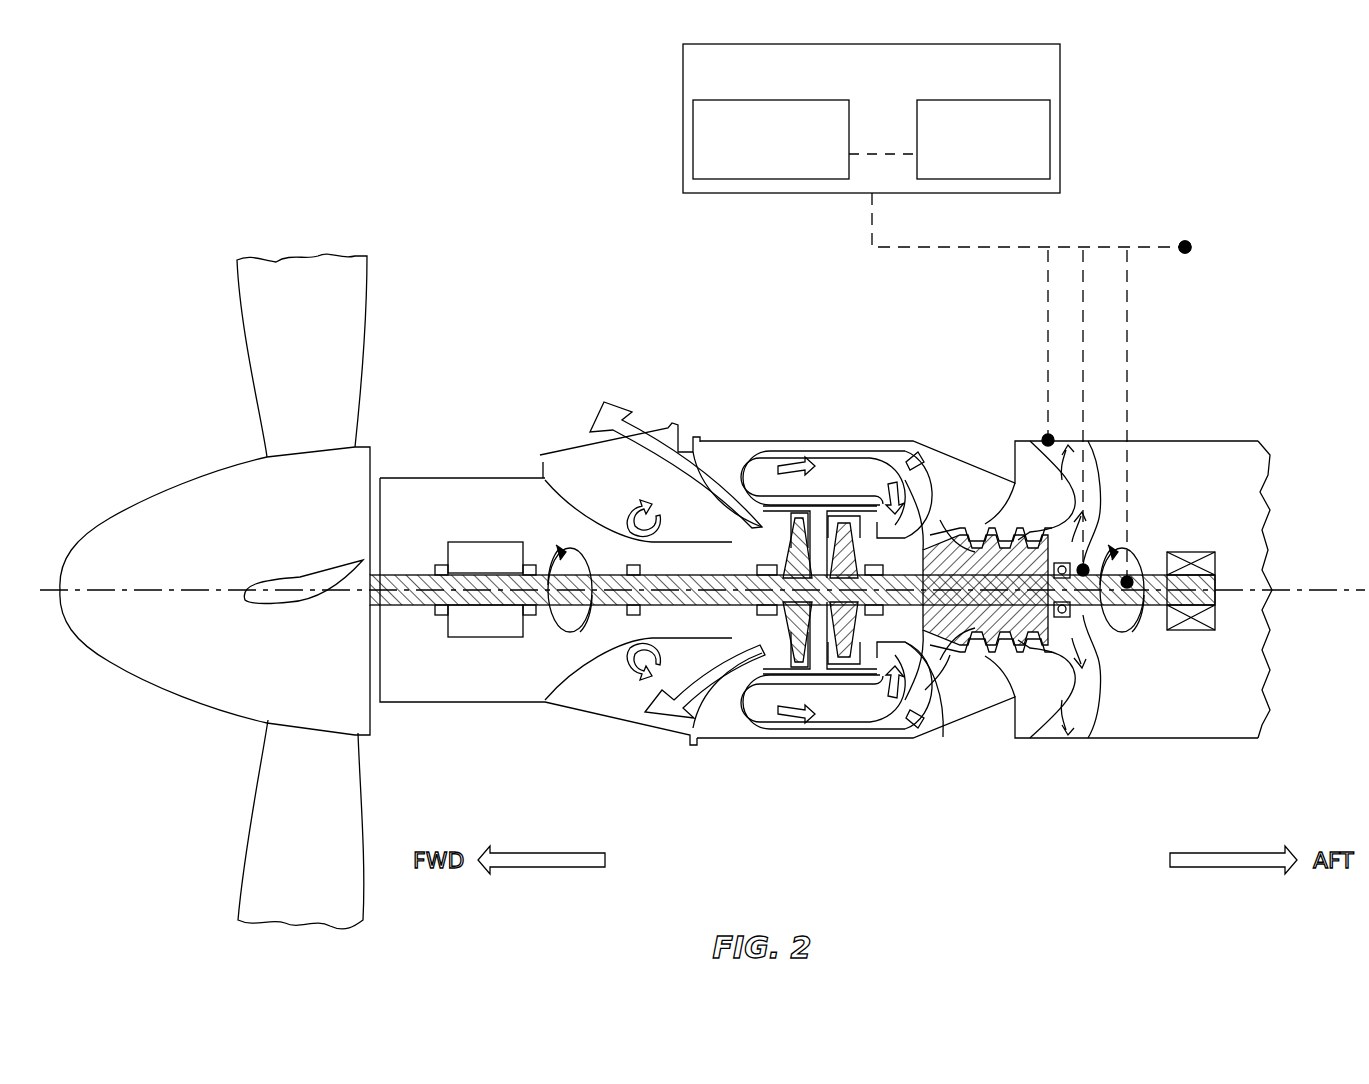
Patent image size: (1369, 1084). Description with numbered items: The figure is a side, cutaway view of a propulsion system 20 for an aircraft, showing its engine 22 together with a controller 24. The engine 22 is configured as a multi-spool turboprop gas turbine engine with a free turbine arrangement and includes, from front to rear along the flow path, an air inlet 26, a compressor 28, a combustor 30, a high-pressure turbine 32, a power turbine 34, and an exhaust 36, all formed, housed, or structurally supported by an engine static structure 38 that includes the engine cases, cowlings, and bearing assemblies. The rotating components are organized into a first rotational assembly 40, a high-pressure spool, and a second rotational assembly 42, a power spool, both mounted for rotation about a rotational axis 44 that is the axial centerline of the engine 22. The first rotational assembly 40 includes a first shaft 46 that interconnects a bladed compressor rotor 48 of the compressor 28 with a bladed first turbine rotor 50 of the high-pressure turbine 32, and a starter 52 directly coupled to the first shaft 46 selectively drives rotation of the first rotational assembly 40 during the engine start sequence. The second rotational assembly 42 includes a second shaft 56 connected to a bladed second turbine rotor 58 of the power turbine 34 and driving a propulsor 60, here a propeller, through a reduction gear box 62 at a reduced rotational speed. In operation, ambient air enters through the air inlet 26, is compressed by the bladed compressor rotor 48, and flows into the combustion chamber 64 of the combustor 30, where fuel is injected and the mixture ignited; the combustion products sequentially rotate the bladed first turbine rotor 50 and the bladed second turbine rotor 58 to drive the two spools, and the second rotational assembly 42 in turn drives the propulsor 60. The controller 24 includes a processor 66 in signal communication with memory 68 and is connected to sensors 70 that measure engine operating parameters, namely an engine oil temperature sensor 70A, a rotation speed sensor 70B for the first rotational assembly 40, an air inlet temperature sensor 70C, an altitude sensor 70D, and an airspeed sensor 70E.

The propulsion system 20 is at (1258, 200).
The engine 22 is at (1175, 423).
The controller 24 is at (972, 85).
The air inlet 26 is at (1088, 436).
The compressor 28 is at (980, 660).
The combustor 30 is at (830, 442).
The high-pressure turbine 32 is at (905, 636).
The power turbine 34 is at (762, 622).
The exhaust 36 is at (610, 718).
The engine static structure 38 is at (1127, 440).
The first rotational assembly 40 is at (895, 548).
The second rotational assembly 42 is at (548, 640).
The rotational axis 44 is at (1343, 595).
The first shaft 46 is at (935, 568).
The bladed compressor rotor 48 is at (1008, 522).
The bladed first turbine rotor 50 is at (852, 642).
The starter 52 is at (1197, 632).
The second shaft 56 is at (753, 548).
The bladed second turbine rotor 58 is at (798, 548).
The propulsor 60 is at (168, 690).
The reduction gear box 62 is at (485, 540).
The combustion chamber 64 is at (835, 700).
The processor 66 is at (757, 166).
The memory 68 is at (970, 166).
The sensors 70 is at (1222, 272).
The engine oil temperature sensor 70A is at (1087, 565).
The rotation speed sensor 70B is at (1130, 578).
The air inlet temperature sensor 70C is at (1046, 436).
The altitude sensor 70D is at (1185, 240).
The airspeed sensor 70E is at (1185, 247).